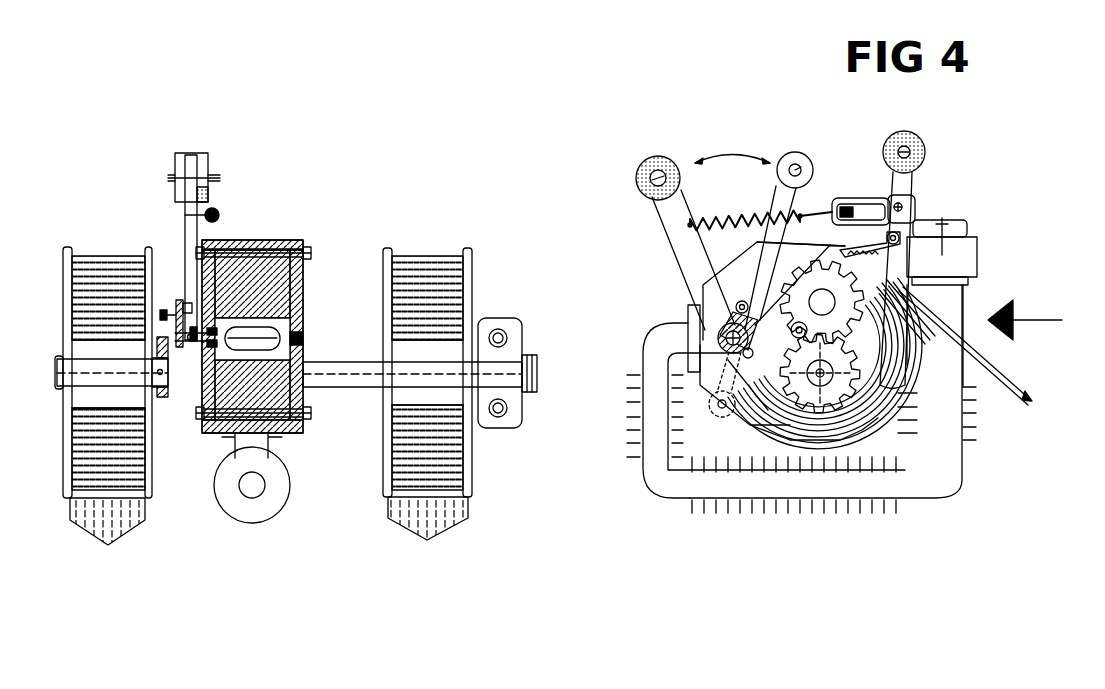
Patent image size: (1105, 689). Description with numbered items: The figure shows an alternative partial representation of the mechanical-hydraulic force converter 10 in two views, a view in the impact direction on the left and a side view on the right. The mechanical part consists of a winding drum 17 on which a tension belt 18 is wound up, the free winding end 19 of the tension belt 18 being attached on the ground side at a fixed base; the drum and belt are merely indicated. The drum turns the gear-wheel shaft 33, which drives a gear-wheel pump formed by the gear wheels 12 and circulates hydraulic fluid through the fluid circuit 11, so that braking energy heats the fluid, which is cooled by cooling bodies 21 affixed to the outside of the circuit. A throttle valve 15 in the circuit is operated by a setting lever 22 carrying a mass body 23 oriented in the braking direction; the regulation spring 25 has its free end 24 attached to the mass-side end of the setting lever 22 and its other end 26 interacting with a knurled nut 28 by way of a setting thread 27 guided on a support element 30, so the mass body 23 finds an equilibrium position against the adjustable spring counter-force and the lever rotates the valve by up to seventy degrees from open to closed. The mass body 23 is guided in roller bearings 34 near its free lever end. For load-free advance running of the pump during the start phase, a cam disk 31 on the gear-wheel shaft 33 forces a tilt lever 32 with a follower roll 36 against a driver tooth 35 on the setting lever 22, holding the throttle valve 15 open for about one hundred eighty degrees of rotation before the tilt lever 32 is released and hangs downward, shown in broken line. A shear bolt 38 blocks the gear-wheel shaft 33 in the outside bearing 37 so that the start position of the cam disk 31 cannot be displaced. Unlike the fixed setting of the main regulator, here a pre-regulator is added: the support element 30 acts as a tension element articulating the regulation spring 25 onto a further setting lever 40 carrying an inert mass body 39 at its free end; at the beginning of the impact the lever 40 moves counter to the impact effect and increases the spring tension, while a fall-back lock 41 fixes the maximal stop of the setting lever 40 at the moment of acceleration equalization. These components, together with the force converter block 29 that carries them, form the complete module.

The mechanical-hydraulic force converter 10 is at (700, 362).
The fluid circuit 11 is at (256, 488).
The gear wheels 12 is at (872, 345).
The throttle valve 15 is at (258, 322).
The winding drum 17 is at (148, 412).
The tension belt 18 is at (100, 447).
The free winding end 19 is at (108, 508).
The cooling bodies 21 is at (687, 505).
The setting lever 22 is at (192, 233).
The mass body 23 is at (205, 168).
The free end of the regulation spring 24 is at (690, 227).
The regulation spring 25 is at (733, 215).
The other end of the regulation spring 26 is at (797, 218).
The setting thread 27 is at (820, 212).
The knurled nut 28 is at (218, 215).
The force converter block 29 is at (265, 292).
The support element 30 is at (843, 210).
The cam disk 31 is at (165, 395).
The tilt lever 32 is at (168, 305).
The gear-wheel shaft 33 is at (372, 386).
The roller bearings 34 is at (303, 340).
The driver tooth 35 is at (186, 300).
The follower roll 36 is at (166, 315).
The outside bearing 37 is at (505, 412).
The shear bolt 38 is at (528, 393).
The mass body 39 is at (912, 152).
The further setting lever 40 is at (905, 183).
The fall-back lock 41 is at (885, 248).